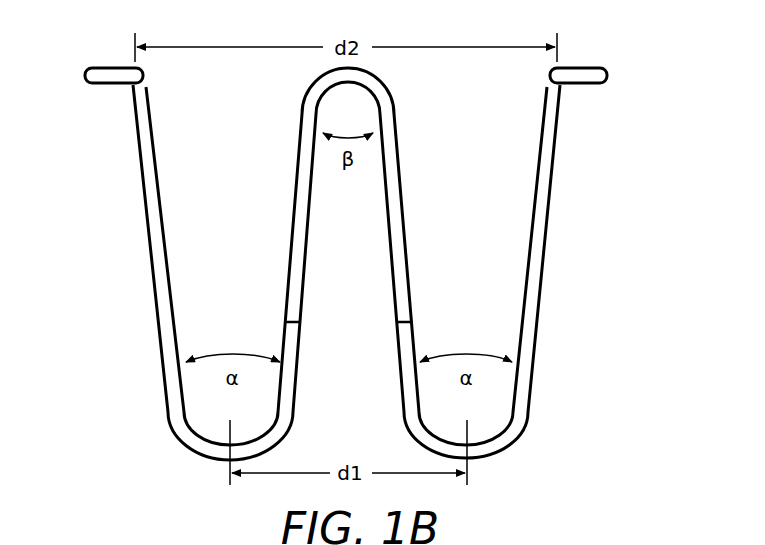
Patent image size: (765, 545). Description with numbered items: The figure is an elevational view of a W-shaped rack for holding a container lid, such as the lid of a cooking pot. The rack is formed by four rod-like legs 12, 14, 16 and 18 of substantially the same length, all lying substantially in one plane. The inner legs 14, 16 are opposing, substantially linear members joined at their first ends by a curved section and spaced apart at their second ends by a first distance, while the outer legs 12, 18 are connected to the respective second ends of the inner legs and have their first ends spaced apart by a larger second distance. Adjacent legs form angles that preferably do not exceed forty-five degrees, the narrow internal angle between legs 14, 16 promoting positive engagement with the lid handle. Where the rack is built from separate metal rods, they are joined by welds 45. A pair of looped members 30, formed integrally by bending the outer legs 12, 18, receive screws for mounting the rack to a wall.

The leg 12 is at (148, 232).
The leg 14 is at (294, 230).
The leg 16 is at (402, 230).
The leg 18 is at (548, 230).
The looped members 30 is at (96, 67).
The welds 45 is at (382, 318).